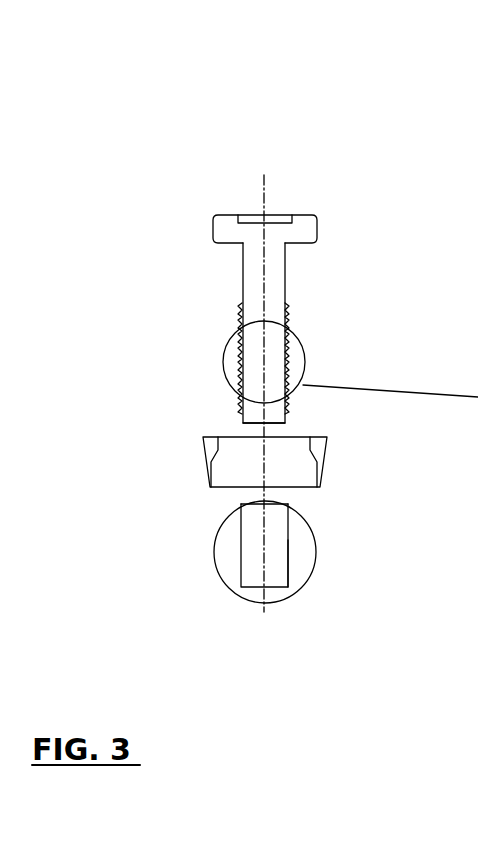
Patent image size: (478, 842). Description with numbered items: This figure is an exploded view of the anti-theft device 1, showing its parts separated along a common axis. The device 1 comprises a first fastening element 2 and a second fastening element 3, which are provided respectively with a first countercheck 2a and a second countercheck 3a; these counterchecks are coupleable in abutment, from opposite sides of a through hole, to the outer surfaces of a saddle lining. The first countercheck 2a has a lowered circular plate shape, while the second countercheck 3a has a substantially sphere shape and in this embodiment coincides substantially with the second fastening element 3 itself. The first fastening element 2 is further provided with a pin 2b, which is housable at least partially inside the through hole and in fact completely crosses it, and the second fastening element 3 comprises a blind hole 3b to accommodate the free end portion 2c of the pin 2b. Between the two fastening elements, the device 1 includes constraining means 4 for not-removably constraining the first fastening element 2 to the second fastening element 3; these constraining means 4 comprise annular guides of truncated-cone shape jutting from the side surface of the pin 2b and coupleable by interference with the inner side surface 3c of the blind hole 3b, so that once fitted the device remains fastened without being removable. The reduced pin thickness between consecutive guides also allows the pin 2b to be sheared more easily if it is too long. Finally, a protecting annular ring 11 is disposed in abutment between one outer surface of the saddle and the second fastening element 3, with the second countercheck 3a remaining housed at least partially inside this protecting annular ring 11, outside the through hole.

The anti-theft device 1 is at (189, 184).
The first fastening element 2 is at (275, 317).
The first countercheck 2a is at (313, 222).
The pin 2b is at (270, 314).
The free end portion 2c is at (245, 408).
The constraining means 4 is at (296, 373).
The protecting annular ring 11 is at (328, 490).
The second fastening element 3 is at (226, 575).
The second countercheck 3a is at (232, 557).
The blind hole 3b is at (270, 565).
The inner side surface 3c is at (288, 557).